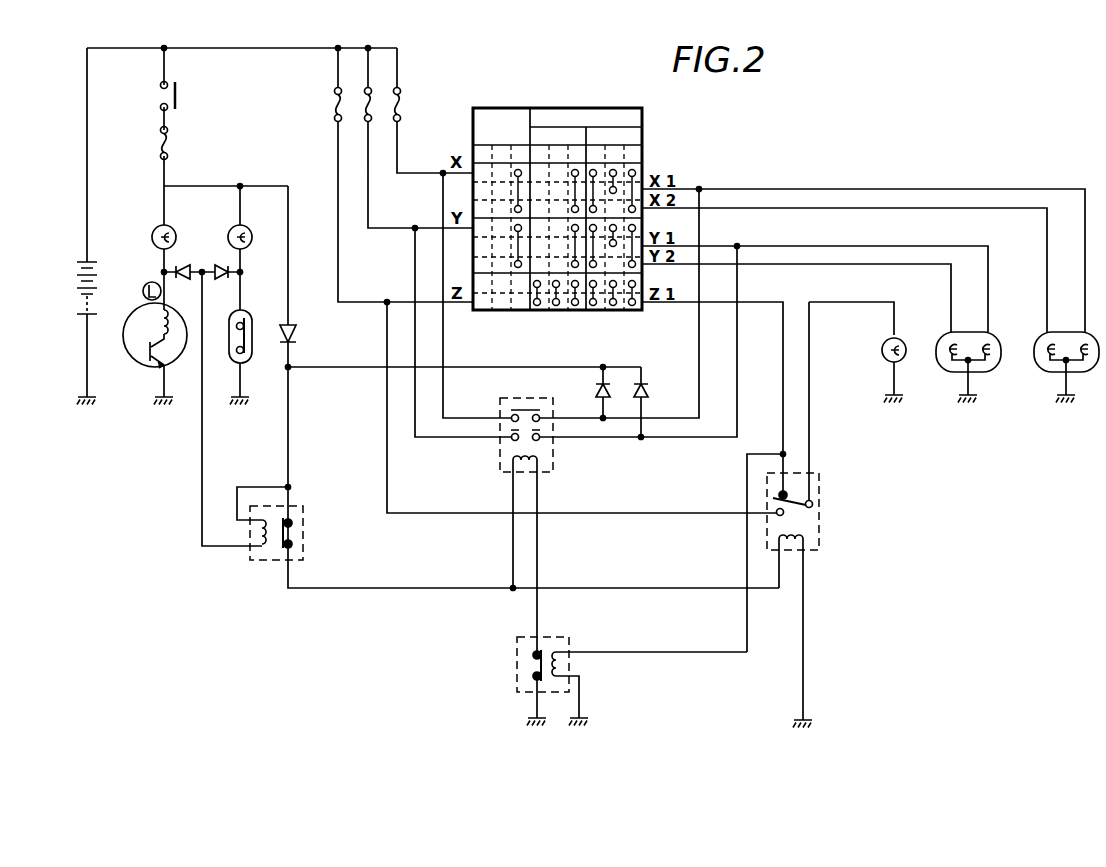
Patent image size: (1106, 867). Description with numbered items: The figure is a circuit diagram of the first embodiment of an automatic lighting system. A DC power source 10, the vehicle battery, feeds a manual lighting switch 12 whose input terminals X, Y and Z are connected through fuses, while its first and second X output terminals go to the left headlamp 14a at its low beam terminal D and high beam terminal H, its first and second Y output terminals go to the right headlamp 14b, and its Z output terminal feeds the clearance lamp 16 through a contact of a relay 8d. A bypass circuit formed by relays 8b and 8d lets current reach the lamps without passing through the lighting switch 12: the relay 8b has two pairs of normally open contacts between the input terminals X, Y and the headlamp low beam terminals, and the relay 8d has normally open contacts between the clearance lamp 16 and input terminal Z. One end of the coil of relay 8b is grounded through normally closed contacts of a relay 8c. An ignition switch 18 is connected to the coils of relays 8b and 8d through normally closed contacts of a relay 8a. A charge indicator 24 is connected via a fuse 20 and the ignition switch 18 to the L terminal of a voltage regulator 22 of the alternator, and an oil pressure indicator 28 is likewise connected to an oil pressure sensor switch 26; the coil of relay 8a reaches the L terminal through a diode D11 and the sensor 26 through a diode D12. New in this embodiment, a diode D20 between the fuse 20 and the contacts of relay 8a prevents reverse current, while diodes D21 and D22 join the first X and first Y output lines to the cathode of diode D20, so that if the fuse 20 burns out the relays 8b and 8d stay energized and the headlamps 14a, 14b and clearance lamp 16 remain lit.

The DC power source 10 is at (76, 282).
The manual lighting switch 12 is at (567, 108).
The left headlamp 14a is at (1042, 368).
The right headlamp 14b is at (945, 368).
The clearance lamp 16 is at (882, 366).
The ignition switch 18 is at (178, 93).
The fuse 20 is at (160, 142).
The voltage regulator 22 is at (134, 355).
The charge indicator 24 is at (153, 228).
The oil pressure sensor switch 26 is at (252, 355).
The oil pressure indicator 28 is at (230, 228).
The relay 8a is at (260, 561).
The relay 8b is at (499, 462).
The relay 8c is at (517, 682).
The relay 8d is at (820, 540).
The diode D11 is at (187, 284).
The diode D12 is at (223, 284).
The diode D20 is at (309, 276).
The diode D21 is at (586, 392).
The diode D22 is at (663, 402).